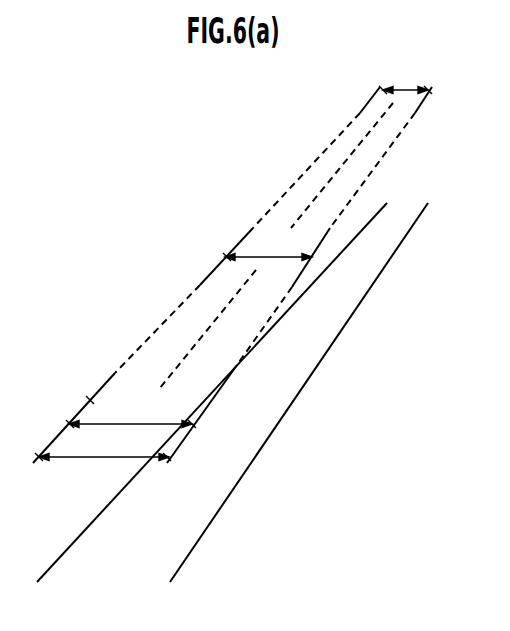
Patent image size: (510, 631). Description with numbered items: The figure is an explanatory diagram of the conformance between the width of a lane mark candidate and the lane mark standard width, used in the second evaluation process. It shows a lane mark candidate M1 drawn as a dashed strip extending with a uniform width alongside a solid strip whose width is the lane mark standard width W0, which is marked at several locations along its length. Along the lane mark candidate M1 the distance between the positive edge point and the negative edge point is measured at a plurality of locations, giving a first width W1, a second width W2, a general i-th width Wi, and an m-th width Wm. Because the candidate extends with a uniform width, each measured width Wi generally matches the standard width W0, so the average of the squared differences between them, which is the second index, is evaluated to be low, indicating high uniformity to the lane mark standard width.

The lane mark candidate M1 is at (292, 205).
The width at a location of the lane mark candidate Wm is at (405, 76).
The lane mark standard width W0 is at (381, 204).
The width at a location of the lane mark candidate Wi is at (267, 245).
The width at a location of the lane mark candidate W2 is at (131, 412).
The width at a location of the lane mark candidate W1 is at (103, 472).